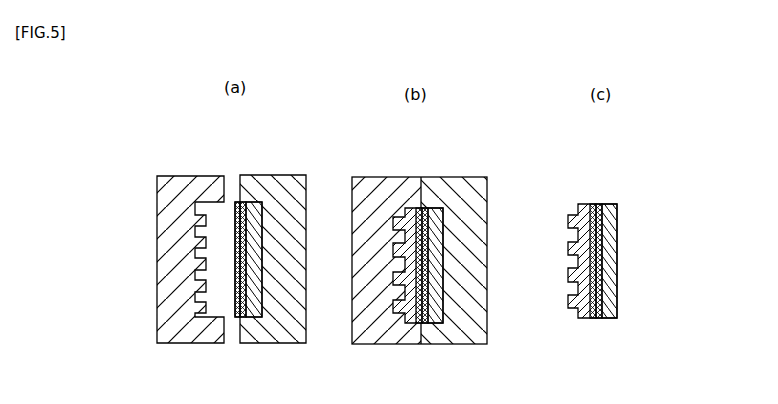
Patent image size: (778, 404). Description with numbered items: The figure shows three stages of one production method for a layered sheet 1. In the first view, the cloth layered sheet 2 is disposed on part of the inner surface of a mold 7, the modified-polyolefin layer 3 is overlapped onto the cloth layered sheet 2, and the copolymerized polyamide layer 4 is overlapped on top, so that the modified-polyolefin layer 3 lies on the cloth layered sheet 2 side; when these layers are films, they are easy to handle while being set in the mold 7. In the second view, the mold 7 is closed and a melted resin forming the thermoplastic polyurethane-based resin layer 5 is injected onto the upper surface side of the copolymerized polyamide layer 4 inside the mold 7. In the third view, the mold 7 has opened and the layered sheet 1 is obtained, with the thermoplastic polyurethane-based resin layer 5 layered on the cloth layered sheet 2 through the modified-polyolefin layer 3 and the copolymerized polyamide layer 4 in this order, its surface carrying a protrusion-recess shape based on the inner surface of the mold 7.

The layered sheet 1 is at (633, 223).
The cloth layered sheet 2 is at (258, 321).
The modified-polyolefin layer 3 is at (247, 319).
The copolymerized polyamide layer 4 is at (233, 309).
The thermoplastic polyurethane-based resin layer 5 is at (393, 308).
The mold 7 is at (212, 176).